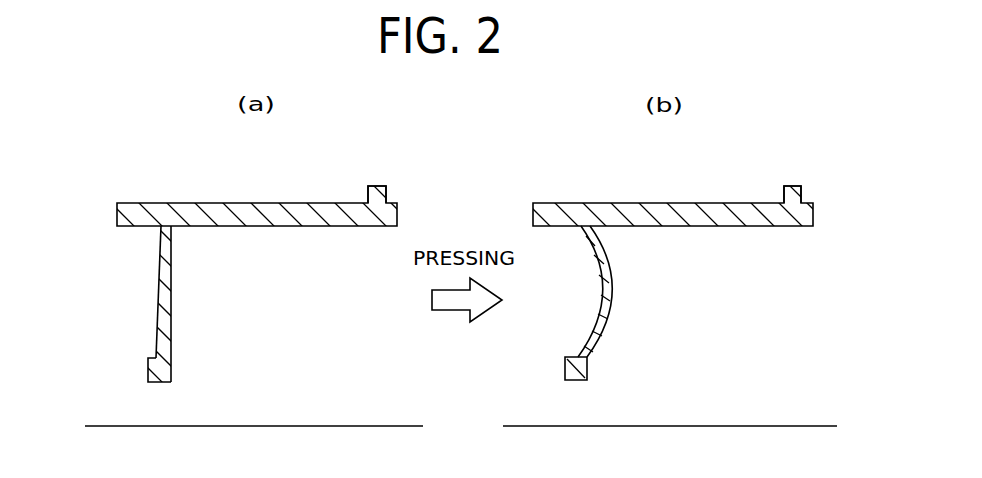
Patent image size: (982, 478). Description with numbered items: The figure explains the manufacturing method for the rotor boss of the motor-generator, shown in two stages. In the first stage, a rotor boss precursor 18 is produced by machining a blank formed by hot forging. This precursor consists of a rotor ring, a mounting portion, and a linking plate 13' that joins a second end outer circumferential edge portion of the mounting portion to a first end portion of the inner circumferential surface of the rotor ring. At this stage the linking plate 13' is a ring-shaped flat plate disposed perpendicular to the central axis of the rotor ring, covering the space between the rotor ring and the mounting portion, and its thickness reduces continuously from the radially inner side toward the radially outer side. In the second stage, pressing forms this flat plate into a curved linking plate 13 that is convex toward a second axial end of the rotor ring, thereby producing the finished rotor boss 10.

The rotor boss precursor 18 is at (108, 158).
The rotor boss 10 is at (553, 158).
The linking plate 13' is at (133, 305).
The linking plate 13 is at (626, 291).